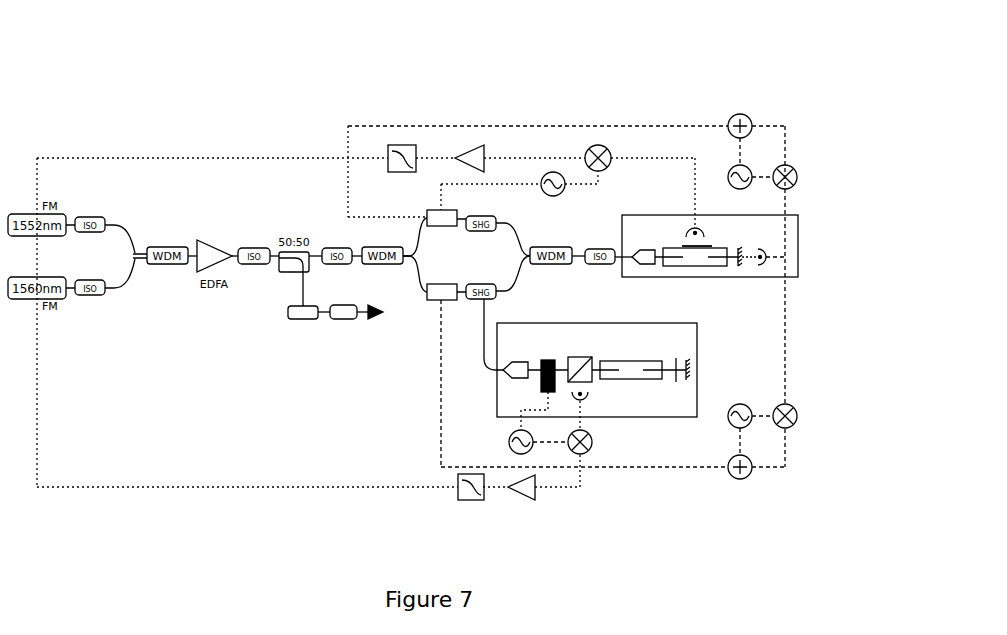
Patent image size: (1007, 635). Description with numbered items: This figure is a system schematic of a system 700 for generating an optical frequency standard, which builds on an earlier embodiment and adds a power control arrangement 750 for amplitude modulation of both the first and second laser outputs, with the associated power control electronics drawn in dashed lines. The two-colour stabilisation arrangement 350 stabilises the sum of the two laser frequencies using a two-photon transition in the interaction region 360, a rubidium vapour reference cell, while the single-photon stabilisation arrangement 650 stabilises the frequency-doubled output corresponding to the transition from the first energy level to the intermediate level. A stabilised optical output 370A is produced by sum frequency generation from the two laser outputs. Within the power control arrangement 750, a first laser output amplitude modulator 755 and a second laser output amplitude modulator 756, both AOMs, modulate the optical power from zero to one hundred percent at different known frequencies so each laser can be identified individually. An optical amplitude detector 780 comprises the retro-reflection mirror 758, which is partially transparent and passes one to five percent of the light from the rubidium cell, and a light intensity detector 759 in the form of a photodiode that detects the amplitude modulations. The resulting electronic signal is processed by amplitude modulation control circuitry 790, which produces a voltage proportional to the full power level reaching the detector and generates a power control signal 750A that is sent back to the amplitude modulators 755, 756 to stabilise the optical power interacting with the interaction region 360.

The system for generating an optical frequency standard 700 is at (95, 106).
The power control arrangement 750 is at (684, 116).
The two-colour stabilisation arrangement 350 is at (650, 185).
The amplitude modulation control circuitry 790 is at (758, 124).
The interaction region 360 is at (787, 211).
The power control signal 750A is at (461, 303).
The first laser output amplitude modulator 755 is at (432, 210).
The second laser output amplitude modulator 756 is at (438, 302).
The optical amplitude detector 780 is at (748, 236).
The light intensity detector 759 is at (766, 250).
The retro-reflection mirror 758 is at (742, 262).
The stabilised optical output 370A is at (355, 319).
The single-photon stabilisation arrangement 650 is at (628, 434).